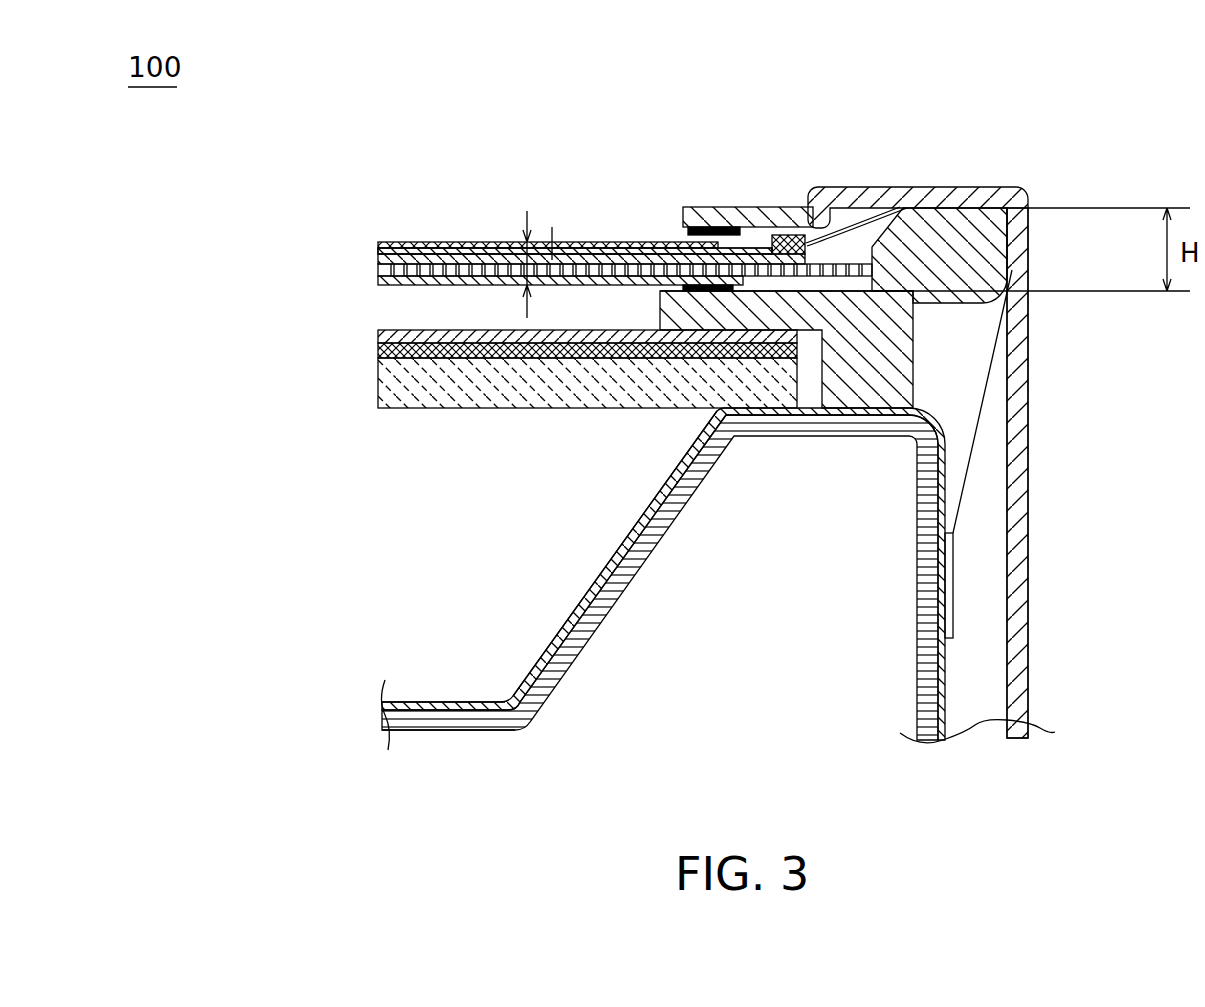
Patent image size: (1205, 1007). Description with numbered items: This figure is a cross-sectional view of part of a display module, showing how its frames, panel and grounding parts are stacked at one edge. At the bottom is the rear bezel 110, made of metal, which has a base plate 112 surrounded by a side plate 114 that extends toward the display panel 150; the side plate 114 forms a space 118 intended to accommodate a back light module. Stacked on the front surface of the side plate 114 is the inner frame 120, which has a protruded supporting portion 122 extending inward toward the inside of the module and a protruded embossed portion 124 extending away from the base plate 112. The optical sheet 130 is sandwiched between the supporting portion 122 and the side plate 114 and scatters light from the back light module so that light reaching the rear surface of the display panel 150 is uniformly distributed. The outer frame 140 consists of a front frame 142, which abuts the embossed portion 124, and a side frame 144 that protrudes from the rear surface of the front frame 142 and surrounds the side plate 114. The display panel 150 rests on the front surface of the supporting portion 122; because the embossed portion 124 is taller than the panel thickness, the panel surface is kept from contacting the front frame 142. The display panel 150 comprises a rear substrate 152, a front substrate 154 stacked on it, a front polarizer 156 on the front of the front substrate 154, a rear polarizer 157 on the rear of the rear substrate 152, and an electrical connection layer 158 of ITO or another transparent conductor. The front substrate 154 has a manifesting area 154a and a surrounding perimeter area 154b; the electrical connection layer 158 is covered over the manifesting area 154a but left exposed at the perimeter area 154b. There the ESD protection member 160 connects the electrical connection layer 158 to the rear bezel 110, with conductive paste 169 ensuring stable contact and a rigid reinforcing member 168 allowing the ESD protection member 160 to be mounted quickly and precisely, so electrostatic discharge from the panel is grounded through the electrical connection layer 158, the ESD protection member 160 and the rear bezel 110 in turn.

The rear bezel 110 is at (605, 828).
The base plate 112 is at (448, 723).
The side plate 114 is at (572, 645).
The space 118 is at (559, 560).
The inner frame 120 is at (880, 530).
The supporting portion 122 is at (745, 312).
The embossed portion 124 is at (907, 262).
The optical sheet 130 is at (360, 384).
The outer frame 140 is at (1085, 97).
The front frame 142 is at (958, 187).
The side frame 144 is at (1020, 270).
The display panel 150 is at (272, 95).
The rear substrate 152 is at (382, 253).
The front substrate 154 is at (576, 209).
The manifesting area 154a is at (583, 257).
The perimeter area 154b is at (676, 245).
The front polarizer 156 is at (497, 244).
The rear polarizer 157 is at (383, 272).
The electrical connection layer 158 is at (460, 248).
The ESD protection member 160 is at (863, 214).
The reinforcing member 168 is at (786, 235).
The conductive paste 169 is at (720, 207).